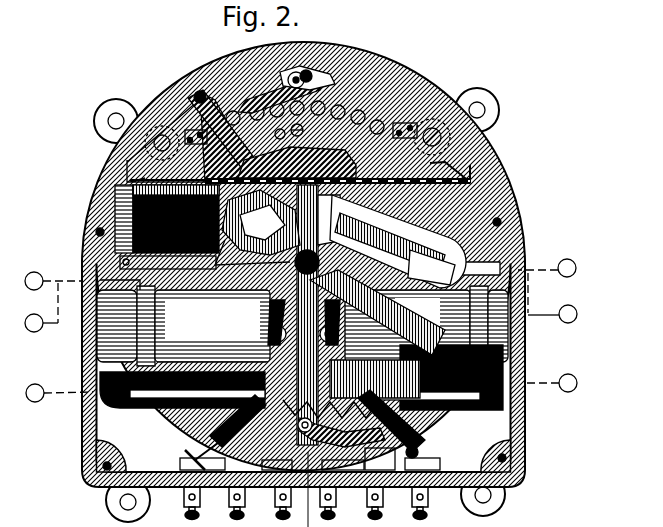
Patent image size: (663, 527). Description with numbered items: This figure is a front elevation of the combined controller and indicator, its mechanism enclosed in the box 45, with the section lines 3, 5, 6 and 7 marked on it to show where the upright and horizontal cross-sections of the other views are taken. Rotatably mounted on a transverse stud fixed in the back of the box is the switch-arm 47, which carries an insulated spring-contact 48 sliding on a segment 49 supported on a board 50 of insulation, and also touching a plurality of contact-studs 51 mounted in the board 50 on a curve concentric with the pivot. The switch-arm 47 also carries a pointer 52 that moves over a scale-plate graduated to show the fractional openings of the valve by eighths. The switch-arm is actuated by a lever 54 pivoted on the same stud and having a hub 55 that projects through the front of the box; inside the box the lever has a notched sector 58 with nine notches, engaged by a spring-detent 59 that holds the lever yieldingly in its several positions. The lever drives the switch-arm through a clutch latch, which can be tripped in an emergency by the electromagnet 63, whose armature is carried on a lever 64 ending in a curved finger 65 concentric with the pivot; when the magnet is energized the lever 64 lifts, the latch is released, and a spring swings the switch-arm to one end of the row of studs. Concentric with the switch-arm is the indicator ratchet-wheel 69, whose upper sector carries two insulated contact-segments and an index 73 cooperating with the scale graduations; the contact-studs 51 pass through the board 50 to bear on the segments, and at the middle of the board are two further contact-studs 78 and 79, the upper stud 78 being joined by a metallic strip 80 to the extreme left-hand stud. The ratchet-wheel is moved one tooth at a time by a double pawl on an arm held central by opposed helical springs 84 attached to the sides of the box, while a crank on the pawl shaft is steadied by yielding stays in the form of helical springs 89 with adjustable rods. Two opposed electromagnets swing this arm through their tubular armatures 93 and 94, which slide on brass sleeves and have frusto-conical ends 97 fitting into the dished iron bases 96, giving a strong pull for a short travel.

The section line 3 3 is at (198, 92).
The section line 5 5 is at (300, 291).
The section line 6 6 is at (301, 318).
The section line 7 7 is at (301, 388).
The box 45 is at (93, 437).
The switch-arm 47 is at (258, 247).
The insulated spring-contact 48 is at (227, 142).
The segment 49 is at (297, 152).
The board 50 is at (388, 104).
The contact-studs 51 is at (358, 117).
The pointer 52 is at (160, 178).
The lever 54 is at (333, 207).
The hub 55 is at (314, 263).
The notched sector 58 is at (372, 281).
The spring-detent 59 is at (300, 446).
The electromagnet 63 is at (112, 208).
The lever 64 is at (168, 271).
The curved finger 65 is at (350, 233).
The ratchet-wheel 69 is at (417, 242).
The index 73 is at (195, 100).
The contact-stud 78 is at (297, 78).
The contact-stud 79 is at (281, 133).
The metallic strip 80 is at (280, 88).
The helical springs 84 is at (163, 400).
The helical springs 89 is at (222, 428).
The armature 93 is at (426, 326).
The armature 94 is at (183, 326).
The iron bases 96 is at (84, 340).
The frusto-conical ends 97 is at (455, 255).